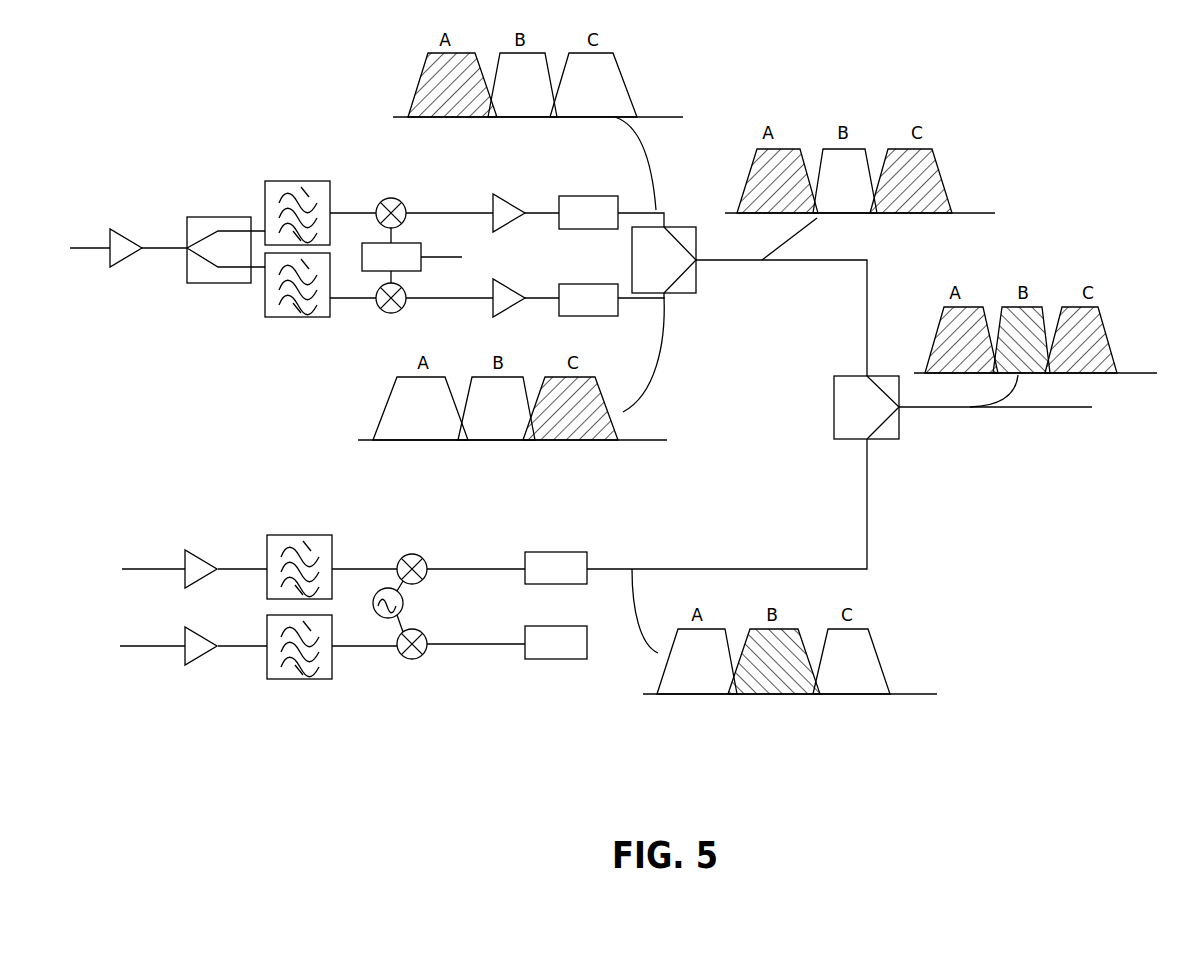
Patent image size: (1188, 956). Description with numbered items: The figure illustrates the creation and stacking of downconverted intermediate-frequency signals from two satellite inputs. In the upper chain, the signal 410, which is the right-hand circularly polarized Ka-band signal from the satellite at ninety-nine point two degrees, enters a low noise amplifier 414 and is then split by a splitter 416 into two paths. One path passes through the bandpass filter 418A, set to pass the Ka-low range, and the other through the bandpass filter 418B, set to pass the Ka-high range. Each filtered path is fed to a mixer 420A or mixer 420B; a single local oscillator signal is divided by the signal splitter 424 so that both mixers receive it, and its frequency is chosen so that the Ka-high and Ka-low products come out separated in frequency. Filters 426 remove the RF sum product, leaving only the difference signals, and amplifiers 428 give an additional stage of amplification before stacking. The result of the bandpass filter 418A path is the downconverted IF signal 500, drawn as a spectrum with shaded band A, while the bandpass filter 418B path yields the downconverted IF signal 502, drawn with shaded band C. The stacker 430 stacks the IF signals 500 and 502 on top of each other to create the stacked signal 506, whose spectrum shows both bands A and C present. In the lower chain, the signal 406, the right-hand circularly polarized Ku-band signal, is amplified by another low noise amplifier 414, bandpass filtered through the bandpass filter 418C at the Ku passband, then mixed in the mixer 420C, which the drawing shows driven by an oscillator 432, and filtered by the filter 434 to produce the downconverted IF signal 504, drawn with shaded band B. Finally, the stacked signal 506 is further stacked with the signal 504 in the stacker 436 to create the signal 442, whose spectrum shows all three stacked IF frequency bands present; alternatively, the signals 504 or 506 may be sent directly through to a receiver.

The signal 406 is at (144, 556).
The signal 410 is at (86, 263).
The low noise amplifier 414 is at (125, 233).
The splitter 416 is at (205, 217).
The bandpass filter 418A is at (300, 180).
The bandpass filter 418B is at (298, 320).
The bandpass filter 418C is at (298, 534).
The mixer 420A is at (402, 202).
The mixer 420B is at (383, 315).
The mixer 420C is at (420, 553).
The signal splitter 424 is at (418, 242).
The filter 426 is at (580, 196).
The amplifier 428 is at (520, 196).
The stacker 430 is at (688, 294).
The local oscillator 432 is at (403, 599).
The filter 434 is at (550, 551).
The stacker 436 is at (843, 440).
The signal 442 is at (990, 407).
The downconverted IF signal 500 is at (660, 210).
The downconverted IF signal 502 is at (665, 297).
The downconverted IF signal 504 is at (740, 569).
The stacked signal 506 is at (762, 260).